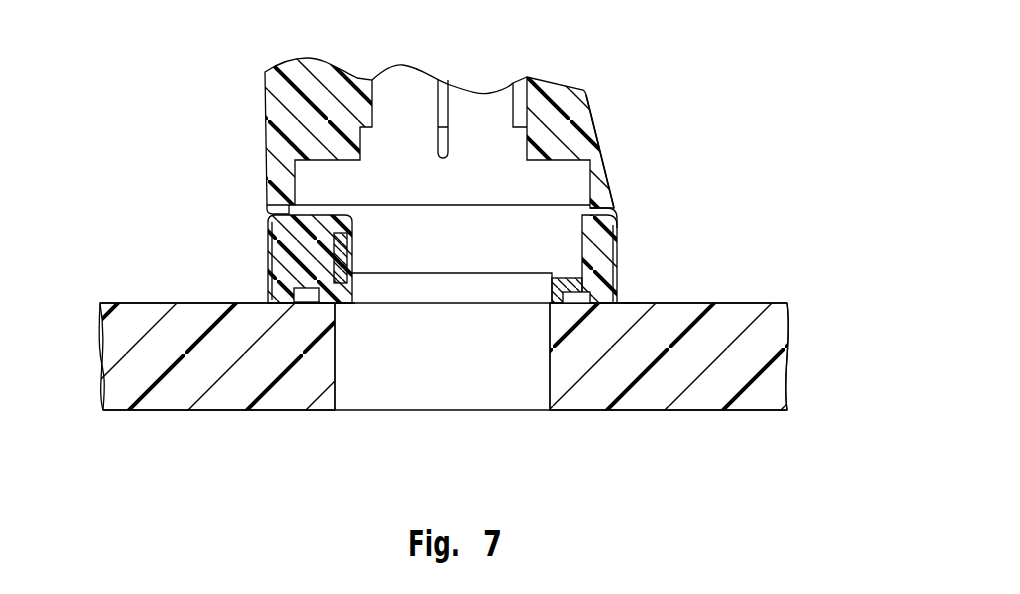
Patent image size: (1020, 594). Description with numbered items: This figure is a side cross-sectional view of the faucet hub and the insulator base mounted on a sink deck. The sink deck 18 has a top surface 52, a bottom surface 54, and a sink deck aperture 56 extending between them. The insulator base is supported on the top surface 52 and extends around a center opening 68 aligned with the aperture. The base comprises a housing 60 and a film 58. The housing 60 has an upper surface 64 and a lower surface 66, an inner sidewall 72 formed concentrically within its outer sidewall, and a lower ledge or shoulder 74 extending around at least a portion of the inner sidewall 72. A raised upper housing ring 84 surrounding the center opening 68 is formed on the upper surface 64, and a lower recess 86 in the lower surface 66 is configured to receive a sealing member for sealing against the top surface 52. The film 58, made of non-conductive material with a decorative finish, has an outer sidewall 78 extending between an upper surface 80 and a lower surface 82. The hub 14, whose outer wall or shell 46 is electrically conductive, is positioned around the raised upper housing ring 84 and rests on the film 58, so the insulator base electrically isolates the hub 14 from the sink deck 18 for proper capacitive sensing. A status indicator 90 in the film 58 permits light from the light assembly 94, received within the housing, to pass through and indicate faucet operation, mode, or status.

The hub 14 is at (583, 117).
The sink deck 18 is at (783, 295).
The outer wall or shell 46 is at (600, 135).
The top surface 52 is at (738, 305).
The bottom surface 54 is at (703, 412).
The sink deck aperture 56 is at (523, 388).
The film 58 is at (270, 233).
The housing 60 is at (333, 210).
The upper surface 64 is at (333, 207).
The lower surface 66 is at (346, 305).
The center opening 68 is at (465, 282).
The inner sidewall 72 is at (582, 227).
The lower ledge or shoulder 74 is at (580, 277).
The outer sidewall 78 is at (620, 252).
The upper surface 80 is at (270, 190).
The lower surface 82 is at (616, 304).
The raised upper housing ring 84 is at (561, 125).
The lower recess 86 is at (306, 314).
The status indicator 90 is at (255, 263).
The light assembly 94 is at (362, 288).